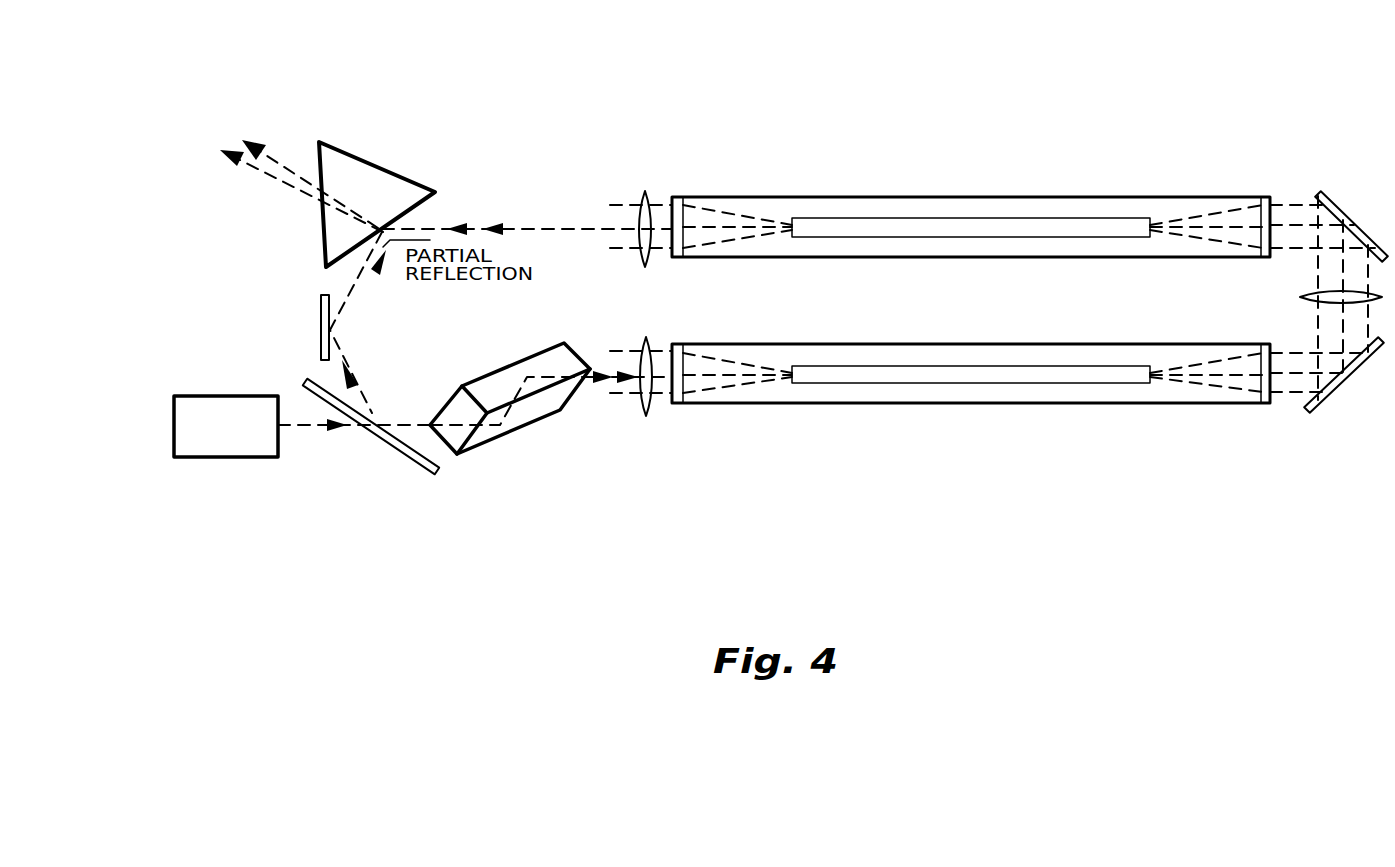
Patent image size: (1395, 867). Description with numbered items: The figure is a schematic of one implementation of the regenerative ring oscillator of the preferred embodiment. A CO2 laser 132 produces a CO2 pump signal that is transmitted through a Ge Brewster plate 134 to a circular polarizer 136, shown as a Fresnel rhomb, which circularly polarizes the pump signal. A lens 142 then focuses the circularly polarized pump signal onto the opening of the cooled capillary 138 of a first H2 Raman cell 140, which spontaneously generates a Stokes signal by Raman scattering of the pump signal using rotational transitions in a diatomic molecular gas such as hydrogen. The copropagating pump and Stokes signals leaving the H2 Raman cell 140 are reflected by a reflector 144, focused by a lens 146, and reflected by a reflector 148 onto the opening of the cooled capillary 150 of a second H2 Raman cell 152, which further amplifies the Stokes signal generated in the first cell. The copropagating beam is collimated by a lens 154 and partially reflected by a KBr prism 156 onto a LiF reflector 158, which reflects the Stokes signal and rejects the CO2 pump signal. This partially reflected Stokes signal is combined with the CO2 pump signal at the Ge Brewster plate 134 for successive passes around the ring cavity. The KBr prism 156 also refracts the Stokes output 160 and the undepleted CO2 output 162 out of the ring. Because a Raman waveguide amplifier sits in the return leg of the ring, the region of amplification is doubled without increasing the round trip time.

The CO2 laser 132 is at (244, 458).
The Ge Brewster plate 134 is at (410, 458).
The circular polarizer 136 is at (462, 386).
The cooled capillary 138 is at (1120, 384).
The H2 Raman cell 140 is at (876, 404).
The lens 142 is at (646, 338).
The reflector 144 is at (1328, 393).
The lens 146 is at (1300, 297).
The reflector 148 is at (1335, 207).
The cooled capillary 150 is at (1024, 218).
The H2 Raman cell 152 is at (790, 197).
The lens 154 is at (645, 192).
The KBr prism 156 is at (380, 167).
The LiF reflector 158 is at (320, 303).
The Stokes output 160 is at (270, 182).
The undepleted CO2 output 162 is at (272, 163).